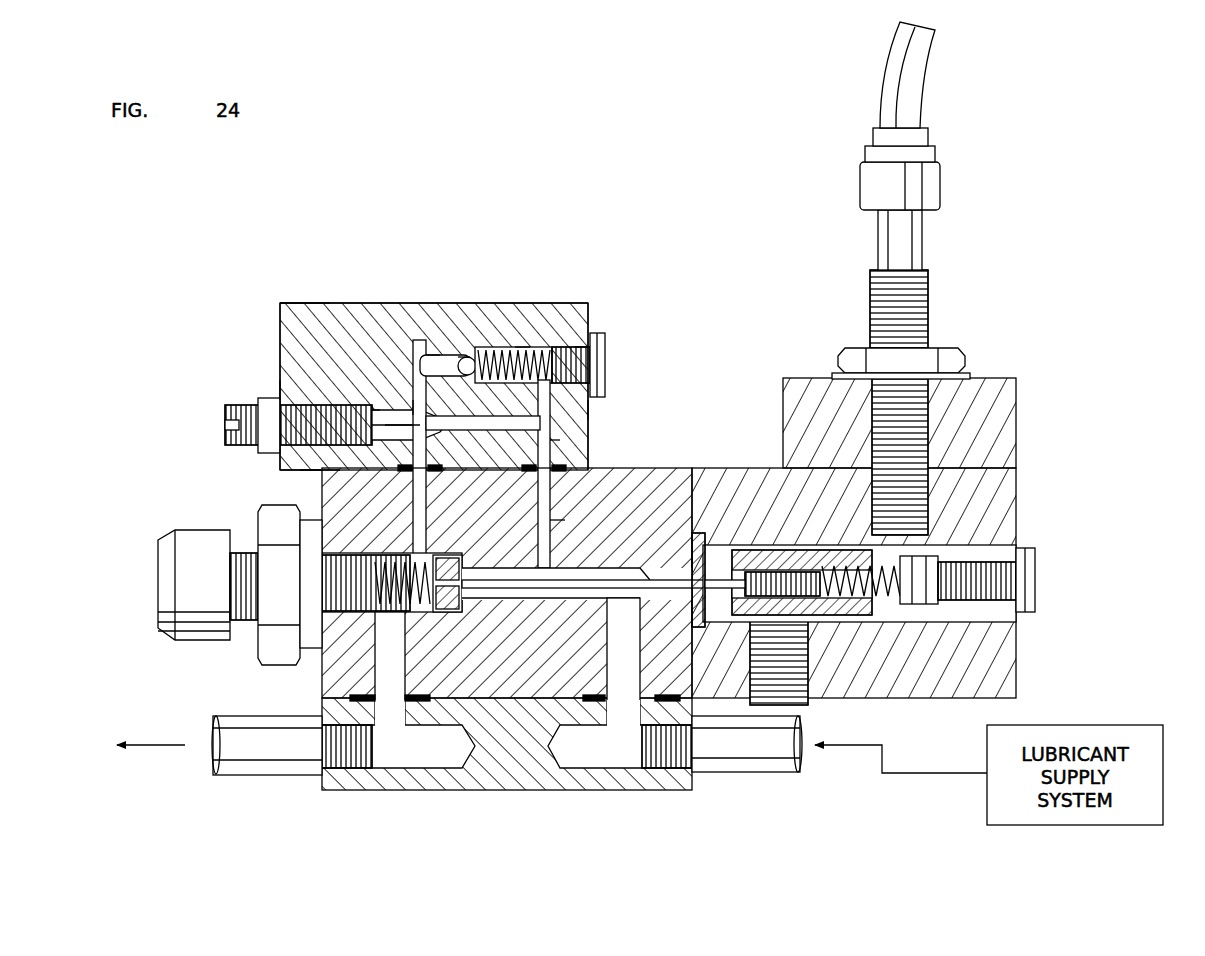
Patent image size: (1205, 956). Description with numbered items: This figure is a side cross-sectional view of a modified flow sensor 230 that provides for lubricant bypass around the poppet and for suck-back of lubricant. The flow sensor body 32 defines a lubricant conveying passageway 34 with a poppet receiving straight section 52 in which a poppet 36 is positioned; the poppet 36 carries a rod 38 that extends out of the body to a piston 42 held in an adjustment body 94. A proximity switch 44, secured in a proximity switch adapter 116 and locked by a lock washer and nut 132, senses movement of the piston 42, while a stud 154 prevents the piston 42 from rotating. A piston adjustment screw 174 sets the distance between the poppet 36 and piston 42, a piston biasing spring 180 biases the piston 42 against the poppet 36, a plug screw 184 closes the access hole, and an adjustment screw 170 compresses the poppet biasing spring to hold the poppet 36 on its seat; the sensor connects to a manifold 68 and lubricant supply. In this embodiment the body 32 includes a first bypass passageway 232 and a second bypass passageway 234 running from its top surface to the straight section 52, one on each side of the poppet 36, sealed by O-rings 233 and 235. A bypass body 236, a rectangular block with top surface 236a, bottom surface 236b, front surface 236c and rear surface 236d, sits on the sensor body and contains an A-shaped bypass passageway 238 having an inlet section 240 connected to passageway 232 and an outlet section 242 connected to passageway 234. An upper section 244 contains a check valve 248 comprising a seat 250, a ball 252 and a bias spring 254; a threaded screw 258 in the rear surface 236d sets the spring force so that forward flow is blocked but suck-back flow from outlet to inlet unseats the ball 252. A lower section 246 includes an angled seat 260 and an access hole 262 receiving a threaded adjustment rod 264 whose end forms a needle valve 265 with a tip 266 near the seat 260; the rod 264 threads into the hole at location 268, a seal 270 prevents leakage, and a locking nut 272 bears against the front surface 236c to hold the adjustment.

The flow sensor 230 is at (537, 185).
The flow sensor body 32 is at (692, 468).
The lubricant conveying passageway 34 is at (625, 680).
The poppet 36 is at (458, 612).
The rod 38 is at (708, 560).
The piston 42 is at (780, 548).
The proximity switch 44 is at (932, 243).
The poppet receiving straight section 52 is at (550, 592).
The manifold block 68 is at (455, 808).
The adjustment body 94 is at (1018, 632).
The proximity switch adapter 116 is at (1020, 410).
The lock washer and nut 132 is at (928, 350).
The stud 154 is at (800, 698).
The adjustment screw 170 is at (205, 530).
The piston adjustment screw 174 is at (938, 560).
The piston biasing spring 180 is at (900, 610).
The plug screw 184 is at (1030, 560).
The first bypass passageway 232 is at (558, 524).
The O-ring 233 is at (542, 448).
The second bypass passageway 234 is at (418, 515).
The O-ring 235 is at (478, 468).
The bypass body 236 is at (278, 305).
The top surface 236a is at (295, 303).
The bottom surface 236b is at (280, 462).
The front surface 236c is at (283, 340).
The rear surface 236d is at (588, 330).
The bypass passageway 238 is at (463, 352).
The inlet section 240 is at (588, 410).
The outlet section 242 is at (437, 352).
The upper section 244 is at (443, 352).
The lower section 246 is at (537, 395).
The check valve 248 is at (582, 345).
The seat 250 is at (480, 348).
The ball 252 is at (522, 345).
The bias spring 254 is at (590, 350).
The threaded screw 258 is at (606, 352).
The angled seat 260 is at (478, 374).
The access hole 262 is at (375, 400).
The threaded adjustment rod 264 is at (228, 420).
The needle valve 265 is at (413, 400).
The tip 266 is at (455, 428).
The location 268 is at (398, 420).
The seal 270 is at (318, 455).
The locking nut 272 is at (283, 395).